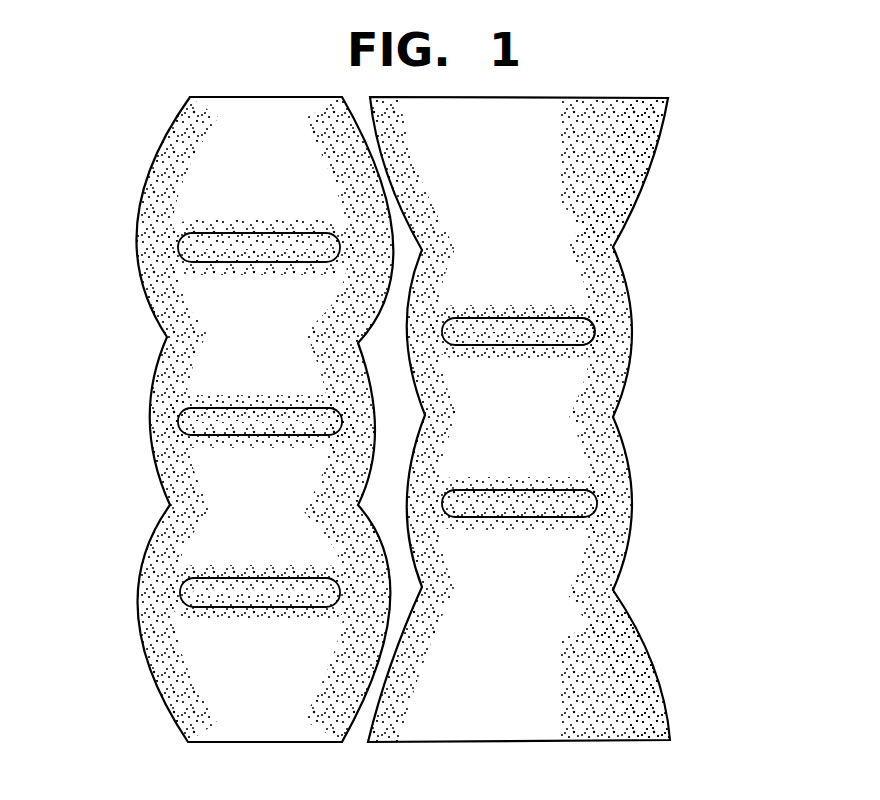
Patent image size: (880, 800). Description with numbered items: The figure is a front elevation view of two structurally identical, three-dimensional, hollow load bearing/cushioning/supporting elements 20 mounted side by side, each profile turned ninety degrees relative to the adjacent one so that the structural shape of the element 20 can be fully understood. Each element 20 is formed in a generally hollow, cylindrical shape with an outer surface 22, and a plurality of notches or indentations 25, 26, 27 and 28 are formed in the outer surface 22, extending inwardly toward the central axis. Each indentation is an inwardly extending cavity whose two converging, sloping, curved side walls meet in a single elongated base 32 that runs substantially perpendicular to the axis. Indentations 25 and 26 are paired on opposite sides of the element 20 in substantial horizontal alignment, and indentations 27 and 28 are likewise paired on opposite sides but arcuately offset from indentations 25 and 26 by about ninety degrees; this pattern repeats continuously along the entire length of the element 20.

The load bearing/cushioning/supporting element 20 is at (128, 223).
The outer surface 22 is at (148, 680).
The indentation 25 is at (268, 247).
The indentation 26 is at (505, 326).
The indentation 27 is at (421, 251).
The indentation 28 is at (357, 343).
The elongated base 32 is at (598, 329).